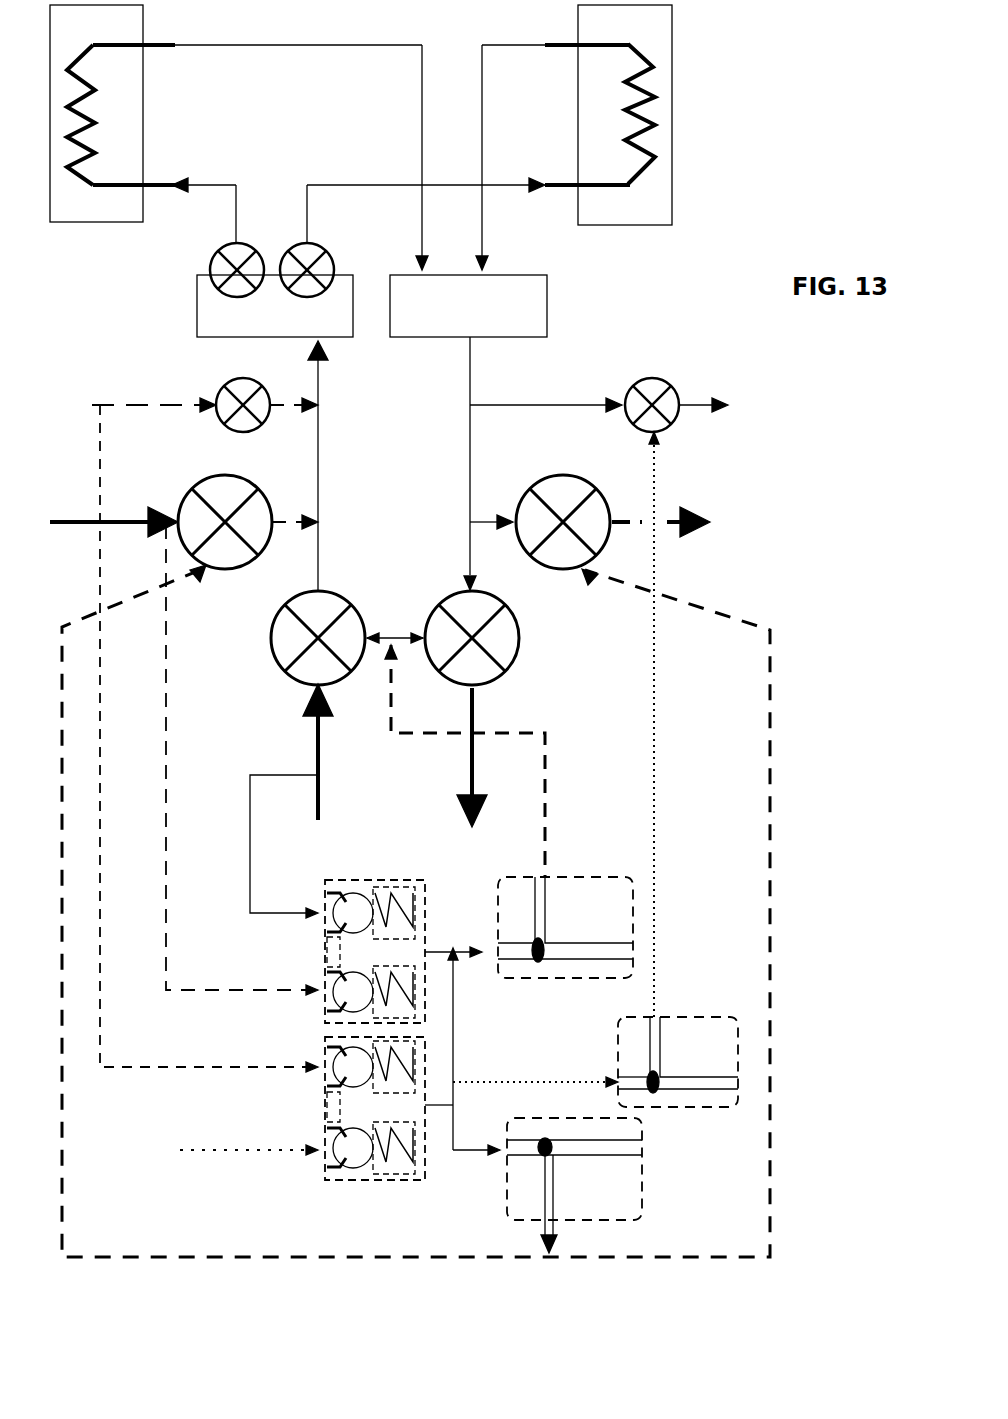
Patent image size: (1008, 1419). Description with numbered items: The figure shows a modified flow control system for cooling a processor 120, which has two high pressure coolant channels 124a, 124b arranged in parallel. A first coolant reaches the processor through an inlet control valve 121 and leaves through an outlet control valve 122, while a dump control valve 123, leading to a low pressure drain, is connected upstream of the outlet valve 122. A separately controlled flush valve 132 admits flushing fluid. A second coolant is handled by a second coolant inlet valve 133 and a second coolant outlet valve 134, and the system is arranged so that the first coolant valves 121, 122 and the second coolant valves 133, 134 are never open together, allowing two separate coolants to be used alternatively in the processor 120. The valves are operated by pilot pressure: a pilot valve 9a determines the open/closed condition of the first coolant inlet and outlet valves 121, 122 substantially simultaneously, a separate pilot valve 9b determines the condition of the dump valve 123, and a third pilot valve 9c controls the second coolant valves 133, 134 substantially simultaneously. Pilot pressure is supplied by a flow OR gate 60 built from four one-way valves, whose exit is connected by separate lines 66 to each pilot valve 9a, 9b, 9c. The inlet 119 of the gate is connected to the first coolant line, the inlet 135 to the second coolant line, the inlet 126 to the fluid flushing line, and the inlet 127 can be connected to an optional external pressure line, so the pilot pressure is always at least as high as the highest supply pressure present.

The processor 120 is at (716, 102).
The coolant channel 124a is at (200, 183).
The coolant channel 124b is at (347, 183).
The flush valve 132 is at (240, 385).
The second coolant inlet valve 133 is at (200, 487).
The inlet control valve 121 is at (285, 645).
The outlet control valve 122 is at (515, 650).
The second coolant outlet valve 134 is at (548, 480).
The dump control valve 123 is at (658, 390).
The flow OR gate 60 is at (288, 1186).
The inlet 119 is at (315, 905).
The inlet 135 is at (318, 990).
The inlet 126 is at (316, 1060).
The inlet 127 is at (318, 1140).
The control line 66 is at (455, 1060).
The pilot valve 9a is at (540, 965).
The pilot valve 9b is at (658, 1100).
The pilot valve 9c is at (550, 1150).